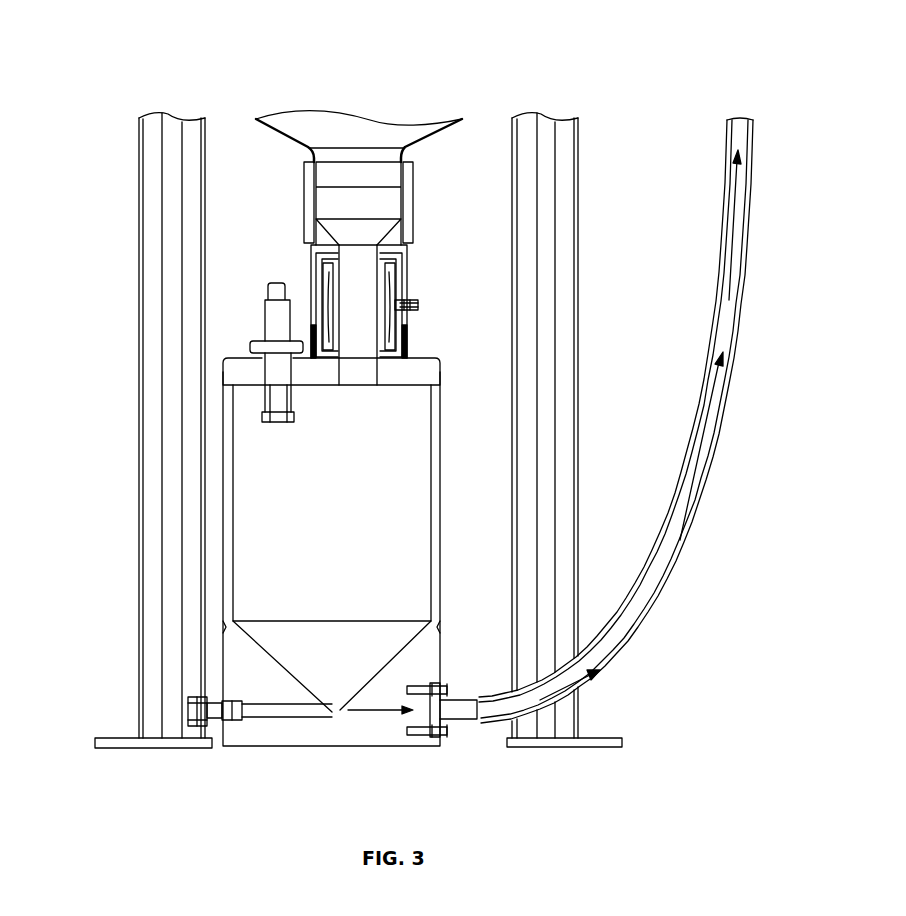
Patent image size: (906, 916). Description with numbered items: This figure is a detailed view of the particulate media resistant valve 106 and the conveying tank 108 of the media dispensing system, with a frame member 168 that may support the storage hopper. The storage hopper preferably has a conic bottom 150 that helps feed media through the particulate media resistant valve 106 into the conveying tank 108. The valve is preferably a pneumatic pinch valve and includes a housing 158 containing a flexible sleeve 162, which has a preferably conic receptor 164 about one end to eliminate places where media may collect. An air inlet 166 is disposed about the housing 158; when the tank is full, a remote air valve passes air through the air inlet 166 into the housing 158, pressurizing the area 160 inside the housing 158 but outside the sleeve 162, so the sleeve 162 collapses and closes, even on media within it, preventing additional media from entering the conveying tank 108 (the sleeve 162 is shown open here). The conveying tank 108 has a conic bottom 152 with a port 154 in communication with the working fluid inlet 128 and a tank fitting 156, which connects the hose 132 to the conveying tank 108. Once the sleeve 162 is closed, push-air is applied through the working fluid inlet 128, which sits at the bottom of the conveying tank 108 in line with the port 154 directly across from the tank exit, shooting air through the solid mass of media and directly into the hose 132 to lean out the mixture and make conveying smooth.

The particulate media resistant valve 106 is at (225, 276).
The conveying tank 108 is at (331, 514).
The working fluid inlet 128 is at (222, 722).
The hose 132 is at (675, 588).
The conic bottom 150 is at (307, 118).
The conic bottom 152 is at (332, 666).
The port 154 is at (333, 714).
The tank fitting 156 is at (445, 737).
The housing 158 is at (395, 277).
The area 160 is at (388, 332).
The flexible sleeve 162 is at (360, 283).
The receptor 164 is at (400, 230).
The air inlet 166 is at (416, 306).
The frame member 168 is at (141, 562).